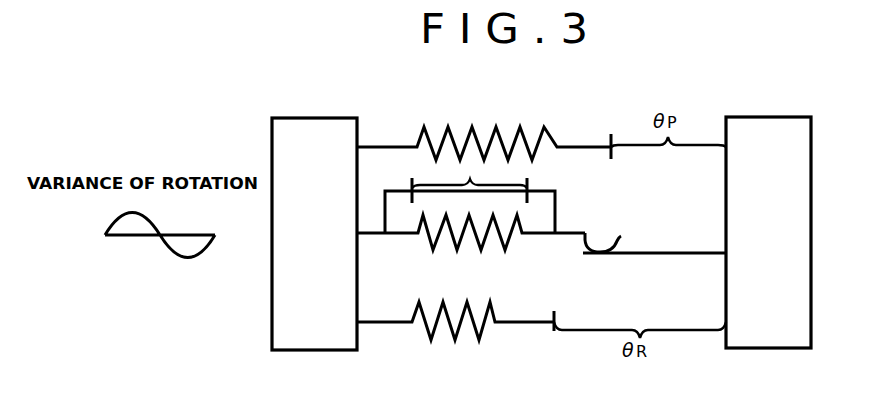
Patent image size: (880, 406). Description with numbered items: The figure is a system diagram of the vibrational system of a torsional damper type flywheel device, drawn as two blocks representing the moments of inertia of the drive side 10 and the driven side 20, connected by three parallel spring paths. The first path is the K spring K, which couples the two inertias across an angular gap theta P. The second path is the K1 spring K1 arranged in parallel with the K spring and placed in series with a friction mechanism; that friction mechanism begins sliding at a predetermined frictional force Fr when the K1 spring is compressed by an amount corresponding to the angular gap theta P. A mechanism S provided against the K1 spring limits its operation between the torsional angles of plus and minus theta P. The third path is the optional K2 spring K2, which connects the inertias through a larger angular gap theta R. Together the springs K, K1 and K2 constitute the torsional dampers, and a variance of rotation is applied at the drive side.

The first inertia body (I1) 10 is at (316, 136).
The second inertia body (I2) 20 is at (768, 129).
The K spring K is at (480, 141).
The K1 spring K1 is at (441, 241).
The K2 spring K2 is at (443, 324).
The mechanism for limiting the operation of the K1 spring S is at (558, 198).
The predetermined frictional force Fr is at (600, 255).